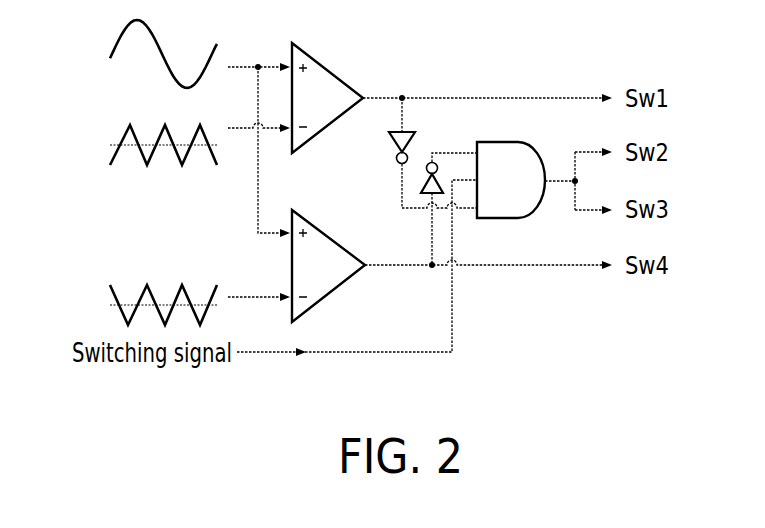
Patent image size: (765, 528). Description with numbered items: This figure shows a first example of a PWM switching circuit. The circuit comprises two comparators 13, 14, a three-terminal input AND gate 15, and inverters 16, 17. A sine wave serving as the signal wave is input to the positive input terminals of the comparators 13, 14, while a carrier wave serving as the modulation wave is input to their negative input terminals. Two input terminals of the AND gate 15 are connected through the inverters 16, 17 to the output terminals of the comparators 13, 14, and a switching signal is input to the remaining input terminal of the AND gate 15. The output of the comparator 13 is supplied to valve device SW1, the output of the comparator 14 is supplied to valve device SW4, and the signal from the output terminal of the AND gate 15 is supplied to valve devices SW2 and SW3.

The comparator 13 is at (338, 76).
The comparator 14 is at (337, 244).
The three-terminal input AND gate 15 is at (522, 142).
The inverter 16 is at (394, 145).
The inverter 17 is at (438, 178).